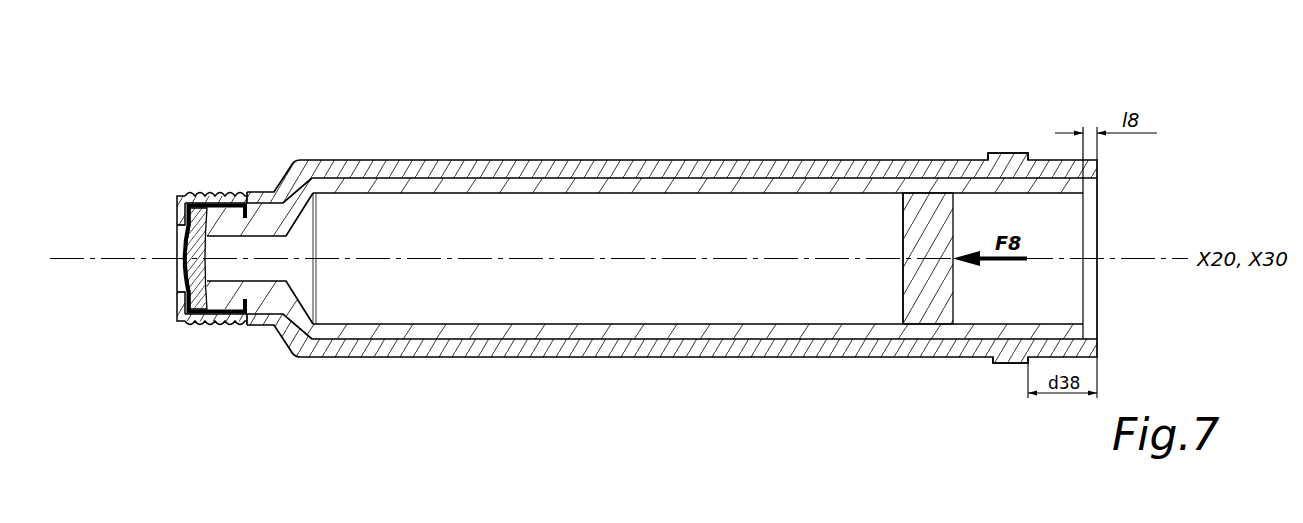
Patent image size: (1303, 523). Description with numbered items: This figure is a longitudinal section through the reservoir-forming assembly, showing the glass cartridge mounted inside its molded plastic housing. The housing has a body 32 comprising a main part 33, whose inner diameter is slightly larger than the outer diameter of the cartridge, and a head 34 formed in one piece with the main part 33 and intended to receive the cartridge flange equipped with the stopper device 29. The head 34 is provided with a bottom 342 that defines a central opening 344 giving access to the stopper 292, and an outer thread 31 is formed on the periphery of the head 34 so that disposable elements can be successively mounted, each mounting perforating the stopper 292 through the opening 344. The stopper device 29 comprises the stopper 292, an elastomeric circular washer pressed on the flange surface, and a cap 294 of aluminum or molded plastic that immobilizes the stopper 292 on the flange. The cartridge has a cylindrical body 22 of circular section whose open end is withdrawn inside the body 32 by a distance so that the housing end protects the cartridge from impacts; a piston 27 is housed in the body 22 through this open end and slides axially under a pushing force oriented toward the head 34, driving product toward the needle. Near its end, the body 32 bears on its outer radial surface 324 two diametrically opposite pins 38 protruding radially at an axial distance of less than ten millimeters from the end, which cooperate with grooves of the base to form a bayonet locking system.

The body 32 is at (283, 74).
The main part 33 is at (309, 168).
The head 34 is at (189, 177).
The outer radial surface 324 is at (711, 366).
The outer thread 31 is at (212, 334).
The bottom 342 is at (180, 211).
The central opening 344 is at (168, 282).
The stopper device 29 is at (282, 344).
The stopper 292 is at (197, 251).
The cap 294 is at (232, 317).
The cylindrical body 22 is at (917, 185).
The piston 27 is at (912, 228).
The pins 38 is at (1008, 158).